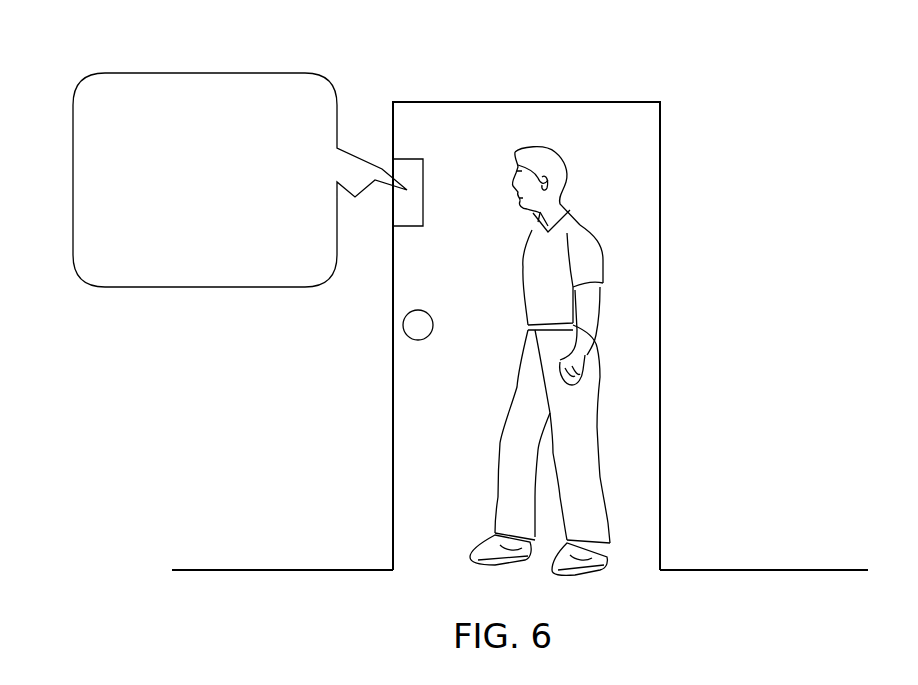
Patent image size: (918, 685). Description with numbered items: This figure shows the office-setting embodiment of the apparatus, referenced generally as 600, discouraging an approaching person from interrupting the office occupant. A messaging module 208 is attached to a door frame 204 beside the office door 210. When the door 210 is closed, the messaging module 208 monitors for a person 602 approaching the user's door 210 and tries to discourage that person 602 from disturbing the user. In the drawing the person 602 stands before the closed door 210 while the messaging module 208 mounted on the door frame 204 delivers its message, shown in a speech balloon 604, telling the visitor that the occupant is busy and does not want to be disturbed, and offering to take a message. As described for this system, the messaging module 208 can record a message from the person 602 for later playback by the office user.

The door frame 204 is at (393, 270).
The messaging module 208 is at (406, 170).
The door 210 is at (569, 112).
The scenario 600 is at (706, 159).
The person 602 is at (580, 170).
The spoken message 604 is at (240, 73).